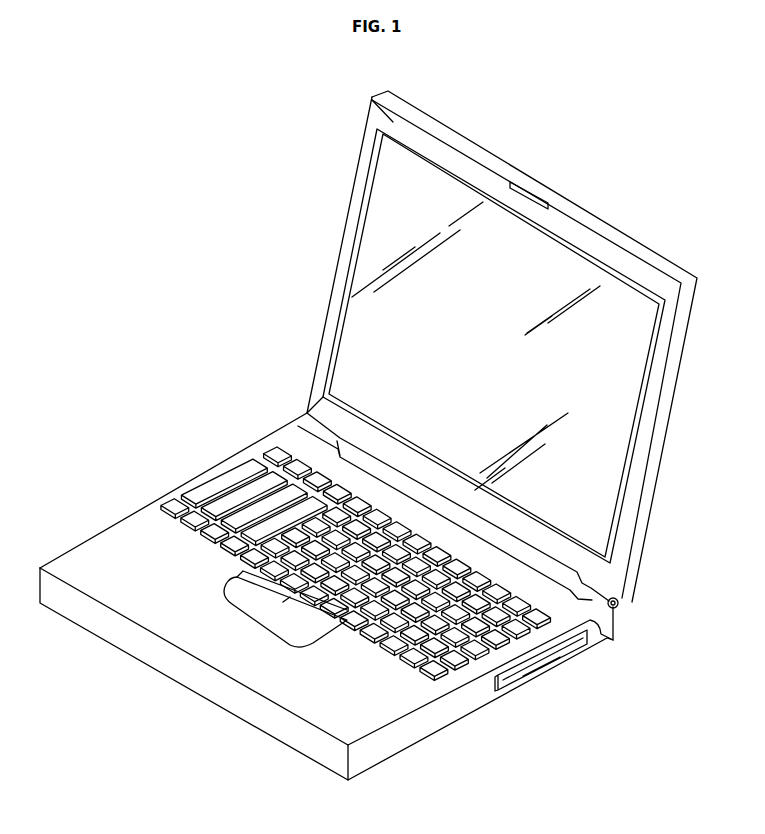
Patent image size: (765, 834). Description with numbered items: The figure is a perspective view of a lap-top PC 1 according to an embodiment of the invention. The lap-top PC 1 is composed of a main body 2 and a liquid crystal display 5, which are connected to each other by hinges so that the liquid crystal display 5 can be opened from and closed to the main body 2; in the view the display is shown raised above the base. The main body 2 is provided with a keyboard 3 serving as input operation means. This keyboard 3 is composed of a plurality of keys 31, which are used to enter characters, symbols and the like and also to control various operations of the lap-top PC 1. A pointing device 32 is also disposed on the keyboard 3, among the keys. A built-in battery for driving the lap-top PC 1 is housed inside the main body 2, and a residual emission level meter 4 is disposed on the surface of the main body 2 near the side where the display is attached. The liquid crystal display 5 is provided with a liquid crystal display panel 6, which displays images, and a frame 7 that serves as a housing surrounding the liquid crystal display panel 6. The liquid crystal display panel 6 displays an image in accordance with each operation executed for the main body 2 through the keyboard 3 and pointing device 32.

The lap-top PC 1 is at (273, 257).
The main body 2 is at (138, 509).
The keyboard 3 is at (273, 433).
The keys 31 is at (222, 545).
The pointing device 32 is at (335, 562).
The residual emission level meter 4 is at (598, 637).
The liquid crystal display 5 is at (324, 314).
The liquid crystal display panel 6 is at (382, 237).
The frame 7 is at (368, 102).